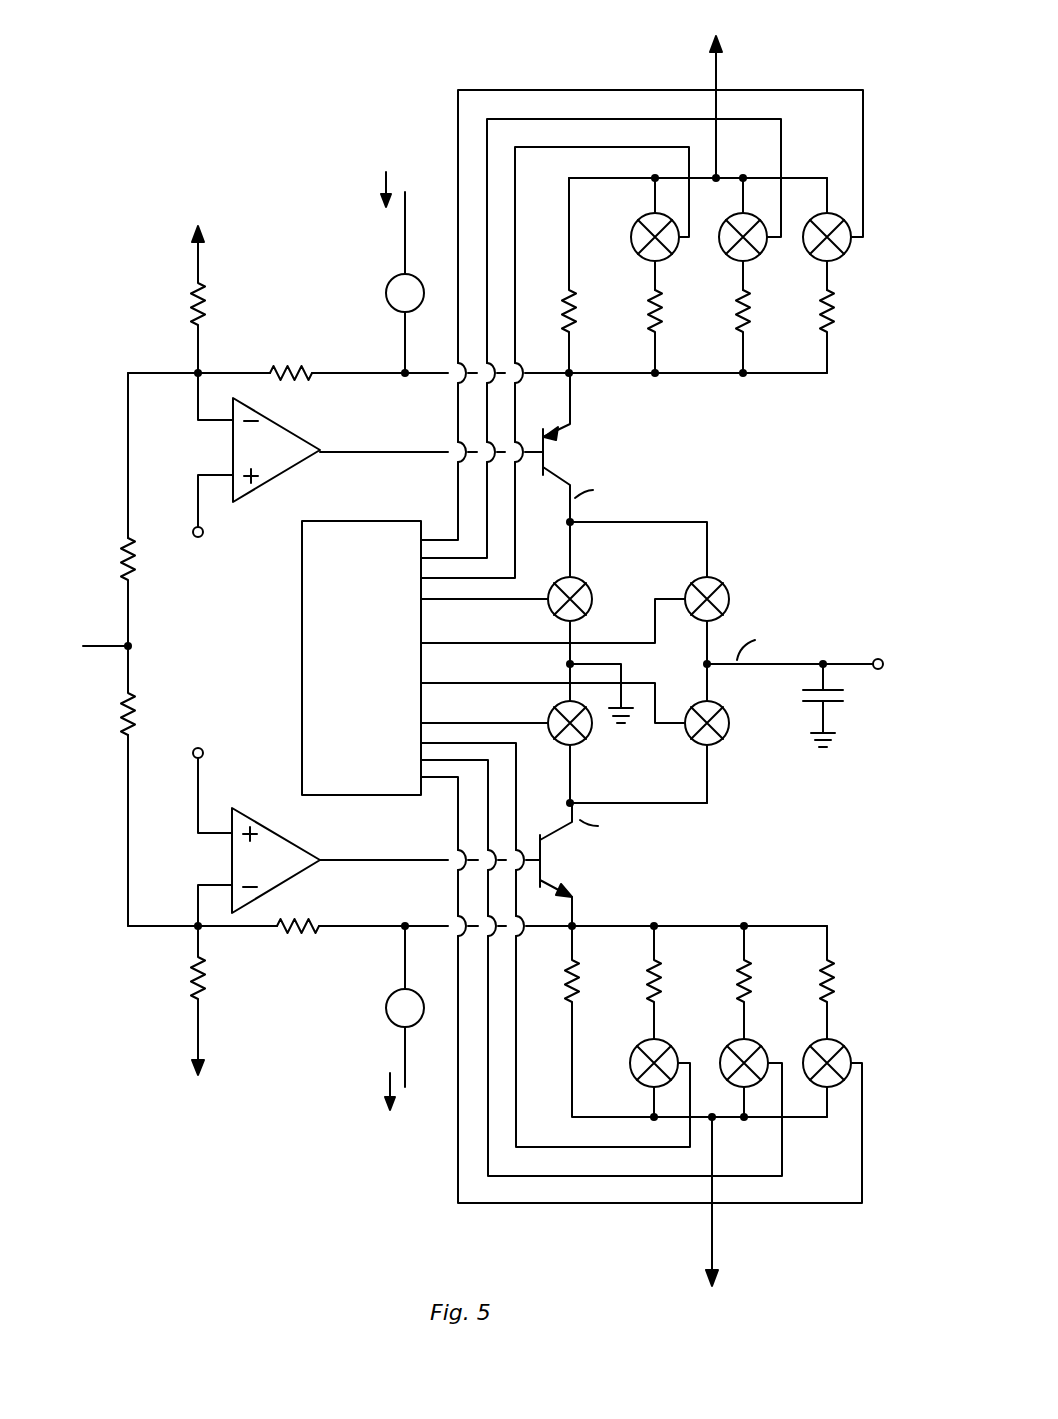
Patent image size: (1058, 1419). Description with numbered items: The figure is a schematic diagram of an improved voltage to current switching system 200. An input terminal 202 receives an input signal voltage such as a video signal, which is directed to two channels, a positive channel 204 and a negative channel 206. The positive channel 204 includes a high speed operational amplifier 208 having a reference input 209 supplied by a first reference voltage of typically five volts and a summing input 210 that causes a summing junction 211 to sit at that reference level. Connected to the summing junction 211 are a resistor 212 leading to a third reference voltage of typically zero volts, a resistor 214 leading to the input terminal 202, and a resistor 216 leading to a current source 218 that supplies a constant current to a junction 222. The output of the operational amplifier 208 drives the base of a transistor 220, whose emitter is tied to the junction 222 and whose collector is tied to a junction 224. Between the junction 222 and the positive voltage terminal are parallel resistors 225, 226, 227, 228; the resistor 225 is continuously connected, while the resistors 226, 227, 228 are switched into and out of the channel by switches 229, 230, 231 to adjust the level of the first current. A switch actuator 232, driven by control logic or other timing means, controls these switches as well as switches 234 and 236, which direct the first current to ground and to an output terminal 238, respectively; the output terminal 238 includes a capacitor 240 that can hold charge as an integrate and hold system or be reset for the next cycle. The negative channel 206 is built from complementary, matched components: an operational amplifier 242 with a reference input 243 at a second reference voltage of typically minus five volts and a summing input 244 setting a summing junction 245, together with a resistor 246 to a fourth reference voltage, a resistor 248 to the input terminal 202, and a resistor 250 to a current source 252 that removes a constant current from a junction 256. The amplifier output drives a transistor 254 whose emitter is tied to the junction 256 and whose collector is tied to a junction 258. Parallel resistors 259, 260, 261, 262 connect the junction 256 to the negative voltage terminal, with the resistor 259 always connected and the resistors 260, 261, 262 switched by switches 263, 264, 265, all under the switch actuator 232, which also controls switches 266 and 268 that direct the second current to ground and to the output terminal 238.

The system 200 is at (538, 35).
The input terminal 202 is at (135, 646).
The positive channel 204 is at (168, 366).
The negative channel 206 is at (110, 940).
The operational amplifier 208 is at (276, 425).
The reference input 209 is at (225, 470).
The summing input 210 is at (225, 428).
The summing junction 211 is at (200, 370).
The resistor 212 is at (188, 305).
The resistor 214 is at (135, 568).
The resistor 216 is at (293, 362).
The current source 218 is at (390, 310).
The transistor 220 is at (552, 450).
The junction 222 is at (585, 360).
The junction 224 is at (575, 526).
The resistor 225 is at (595, 296).
The resistor 226 is at (663, 312).
The resistor 227 is at (750, 312).
The resistor 228 is at (835, 312).
The switch 229 is at (633, 232).
The switch 230 is at (725, 255).
The switch 231 is at (810, 255).
The switch actuator 232 is at (341, 705).
The switch 234 is at (545, 608).
The switch 236 is at (722, 580).
The output terminal 238 is at (755, 668).
The capacitor 240 is at (850, 700).
The operational amplifier 242 is at (288, 838).
The reference input 243 is at (195, 808).
The summing input 244 is at (228, 878).
The summing junction 245 is at (195, 929).
The resistor 246 is at (208, 982).
The resistor 248 is at (138, 722).
The resistor 250 is at (294, 935).
The current source 252 is at (385, 1005).
The transistor 254 is at (560, 860).
The junction 256 is at (578, 924).
The junction 258 is at (578, 800).
The resistor 259 is at (585, 985).
The resistor 260 is at (667, 985).
The resistor 261 is at (778, 975).
The resistor 262 is at (838, 985).
The switch 263 is at (635, 1060).
The switch 264 is at (735, 1043).
The switch 265 is at (810, 1050).
The switch 266 is at (545, 716).
The switch 268 is at (727, 745).